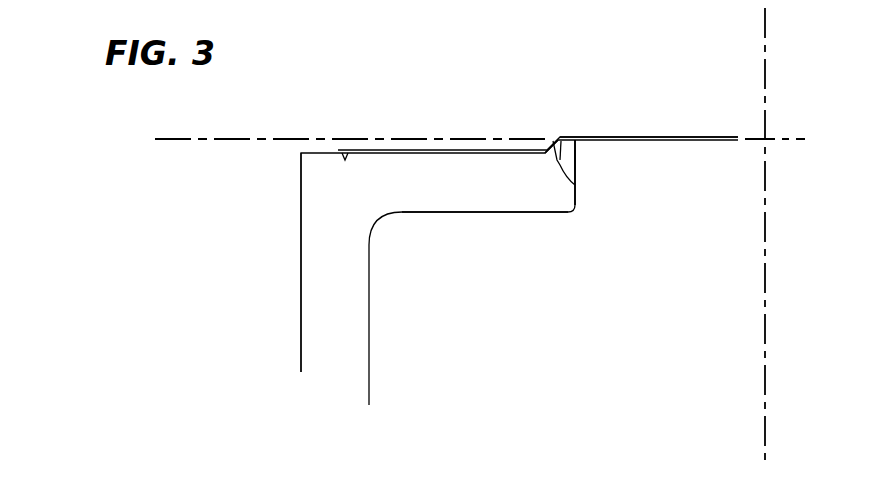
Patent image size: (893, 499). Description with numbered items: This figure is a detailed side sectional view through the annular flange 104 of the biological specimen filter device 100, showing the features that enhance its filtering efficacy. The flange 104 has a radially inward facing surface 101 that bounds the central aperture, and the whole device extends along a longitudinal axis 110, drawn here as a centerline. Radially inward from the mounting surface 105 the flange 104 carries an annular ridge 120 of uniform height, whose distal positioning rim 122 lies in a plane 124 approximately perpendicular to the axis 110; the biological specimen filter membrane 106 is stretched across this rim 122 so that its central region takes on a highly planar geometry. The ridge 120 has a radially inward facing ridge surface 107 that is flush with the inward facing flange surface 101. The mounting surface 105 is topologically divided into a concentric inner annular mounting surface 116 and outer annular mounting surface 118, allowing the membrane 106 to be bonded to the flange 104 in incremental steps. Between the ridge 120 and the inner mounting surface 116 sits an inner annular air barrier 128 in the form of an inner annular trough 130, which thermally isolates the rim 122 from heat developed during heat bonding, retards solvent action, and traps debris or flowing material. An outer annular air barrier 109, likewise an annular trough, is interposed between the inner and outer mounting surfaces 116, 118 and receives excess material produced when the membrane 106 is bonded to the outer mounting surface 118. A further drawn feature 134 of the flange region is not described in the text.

The biological specimen filter device 100 is at (143, 278).
The radially inward facing surface 101 is at (577, 173).
The annular flange 104 is at (447, 185).
The mounting surface 105 is at (496, 158).
The biological specimen filter membrane 106 is at (688, 137).
The radially inward facing ridge surface 107 is at (578, 149).
The outer annular air barrier 109 is at (343, 150).
The longitudinal axis 110 is at (763, 66).
The inner annular mounting surface 116 is at (547, 157).
The outer annular mounting surface 118 is at (343, 158).
The annular ridge 120 is at (567, 162).
The distal positioning rim 122 is at (566, 142).
The plane 124 is at (365, 139).
The inner annular air barrier 128 is at (549, 139).
The inner annular trough 130 is at (577, 177).
The cavity 134 is at (344, 163).